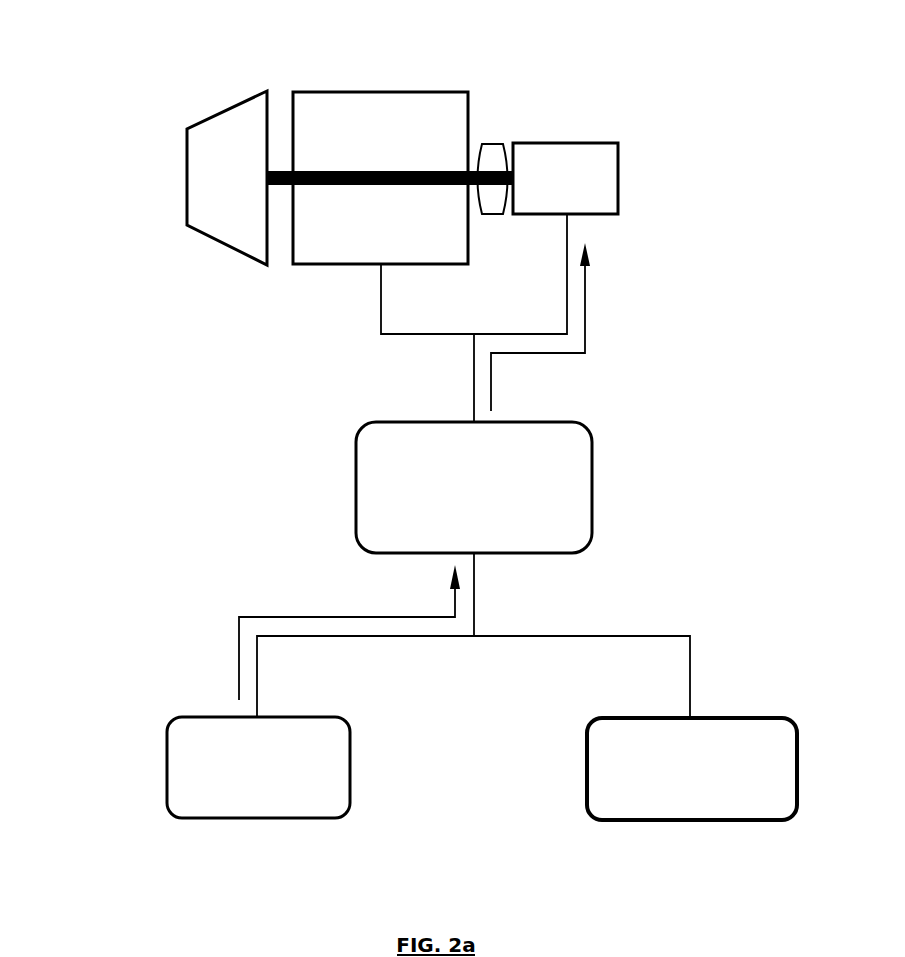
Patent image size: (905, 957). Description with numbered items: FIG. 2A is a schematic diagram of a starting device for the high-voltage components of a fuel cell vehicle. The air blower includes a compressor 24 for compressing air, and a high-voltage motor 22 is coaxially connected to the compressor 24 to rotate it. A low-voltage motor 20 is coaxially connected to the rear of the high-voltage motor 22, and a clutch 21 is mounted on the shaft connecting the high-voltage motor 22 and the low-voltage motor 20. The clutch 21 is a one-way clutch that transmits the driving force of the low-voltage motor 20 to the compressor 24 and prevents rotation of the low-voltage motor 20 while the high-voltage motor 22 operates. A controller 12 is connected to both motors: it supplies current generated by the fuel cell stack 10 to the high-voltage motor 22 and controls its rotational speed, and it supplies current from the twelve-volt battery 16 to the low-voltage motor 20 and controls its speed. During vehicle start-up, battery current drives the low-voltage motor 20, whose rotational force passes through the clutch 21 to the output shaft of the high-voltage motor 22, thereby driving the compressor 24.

The fuel cell stack 10 is at (742, 718).
The controller 12 is at (592, 488).
The 12 V battery 16 is at (167, 772).
The low-voltage motor 20 is at (618, 173).
The clutch 21 is at (490, 143).
The high-voltage motor 22 is at (308, 264).
The compressor 24 is at (185, 175).